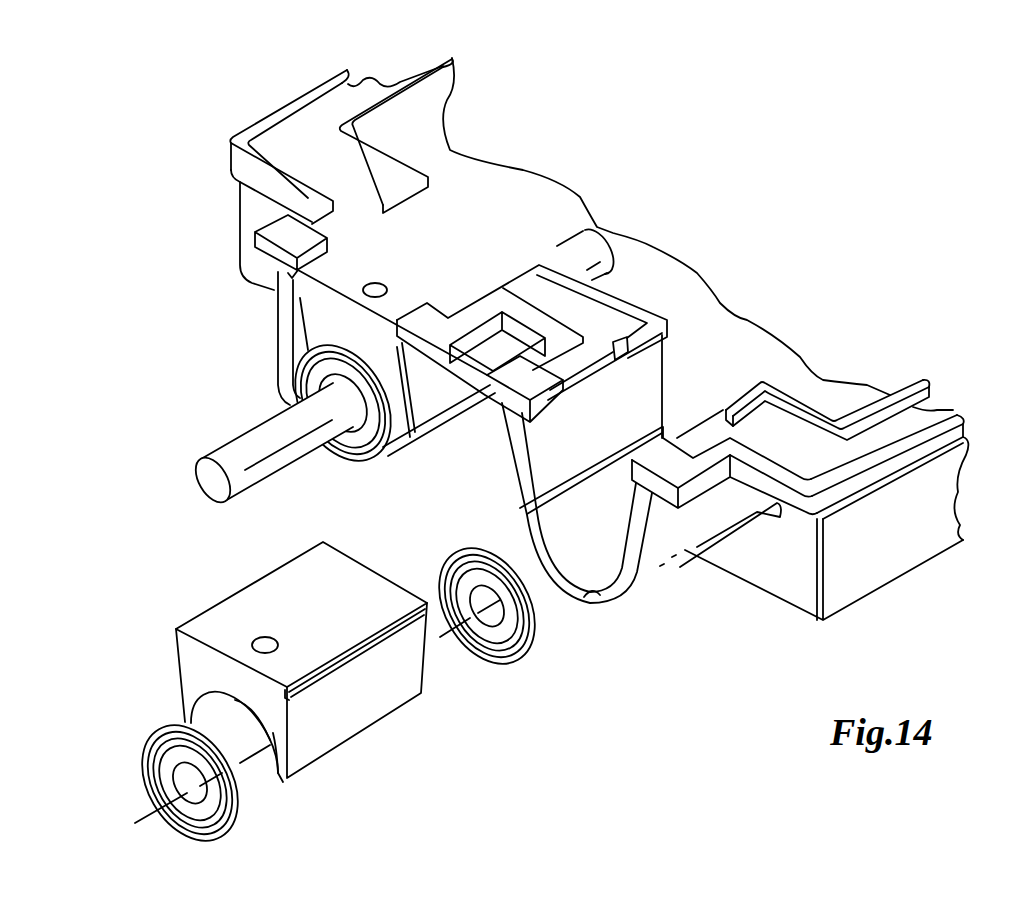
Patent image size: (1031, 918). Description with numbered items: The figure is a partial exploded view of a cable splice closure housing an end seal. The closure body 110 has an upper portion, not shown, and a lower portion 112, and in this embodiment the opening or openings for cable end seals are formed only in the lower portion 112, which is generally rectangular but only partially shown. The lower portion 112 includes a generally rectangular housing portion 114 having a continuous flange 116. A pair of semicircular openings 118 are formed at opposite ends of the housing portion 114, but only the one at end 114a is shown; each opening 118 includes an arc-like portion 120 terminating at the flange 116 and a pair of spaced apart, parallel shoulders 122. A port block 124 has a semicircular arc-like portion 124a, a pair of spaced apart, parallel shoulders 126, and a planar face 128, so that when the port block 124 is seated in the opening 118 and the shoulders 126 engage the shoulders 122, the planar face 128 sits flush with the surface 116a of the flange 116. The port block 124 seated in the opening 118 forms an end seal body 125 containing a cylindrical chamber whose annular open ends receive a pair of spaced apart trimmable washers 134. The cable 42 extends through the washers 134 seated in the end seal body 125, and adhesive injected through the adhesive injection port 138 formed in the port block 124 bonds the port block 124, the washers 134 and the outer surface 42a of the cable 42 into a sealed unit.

The closure body 110 is at (768, 216).
The lower portion 112 is at (912, 548).
The housing portion 114 is at (860, 582).
The end 114a is at (250, 203).
The flange 116 is at (930, 430).
The surface of flange 116a is at (327, 106).
The semicircular opening 118 is at (353, 447).
The arc-like portion 120 is at (660, 567).
The shoulders 122 is at (537, 507).
The port block 124 is at (307, 297).
The semi-circular arc-like portion 124a is at (267, 748).
The end seal body 125 is at (303, 345).
The shoulders 126 is at (187, 722).
The planar face 128 is at (442, 208).
The trimmable washers 134 is at (440, 570).
The adhesive injection port 138 is at (373, 287).
The cable 42 is at (233, 455).
The outer surface of cable 42a is at (593, 240).